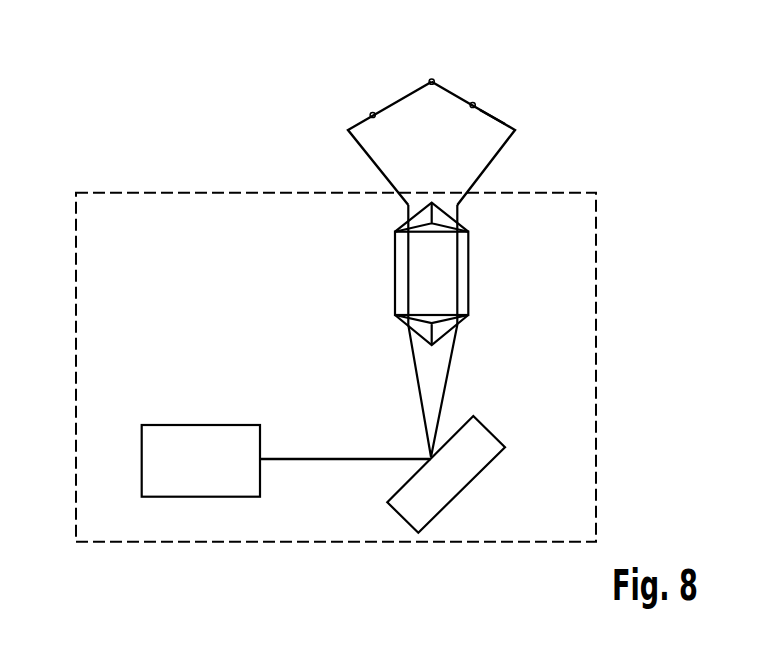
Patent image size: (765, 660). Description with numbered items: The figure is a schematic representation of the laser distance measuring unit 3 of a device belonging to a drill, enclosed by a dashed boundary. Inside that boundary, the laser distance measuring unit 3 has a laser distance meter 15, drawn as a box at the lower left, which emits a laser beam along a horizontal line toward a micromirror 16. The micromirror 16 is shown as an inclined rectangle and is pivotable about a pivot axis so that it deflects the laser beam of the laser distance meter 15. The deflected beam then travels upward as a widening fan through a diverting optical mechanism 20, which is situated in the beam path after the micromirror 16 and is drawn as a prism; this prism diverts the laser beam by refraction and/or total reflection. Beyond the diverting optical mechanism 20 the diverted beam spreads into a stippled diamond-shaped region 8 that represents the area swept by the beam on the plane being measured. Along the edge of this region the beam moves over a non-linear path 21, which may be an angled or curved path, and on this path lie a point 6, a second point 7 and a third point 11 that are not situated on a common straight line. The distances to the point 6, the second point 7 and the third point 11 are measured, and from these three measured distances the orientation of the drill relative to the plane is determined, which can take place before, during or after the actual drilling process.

The laser distance measuring unit 3 is at (215, 212).
The point 6 is at (474, 103).
The second point 7 is at (432, 79).
The detection region 8 is at (478, 153).
The third point 11 is at (370, 114).
The laser distance meter 15 is at (203, 437).
The micromirror 16 is at (467, 475).
The diverting optical mechanism 20 is at (460, 279).
The non-linear path 21 is at (493, 117).